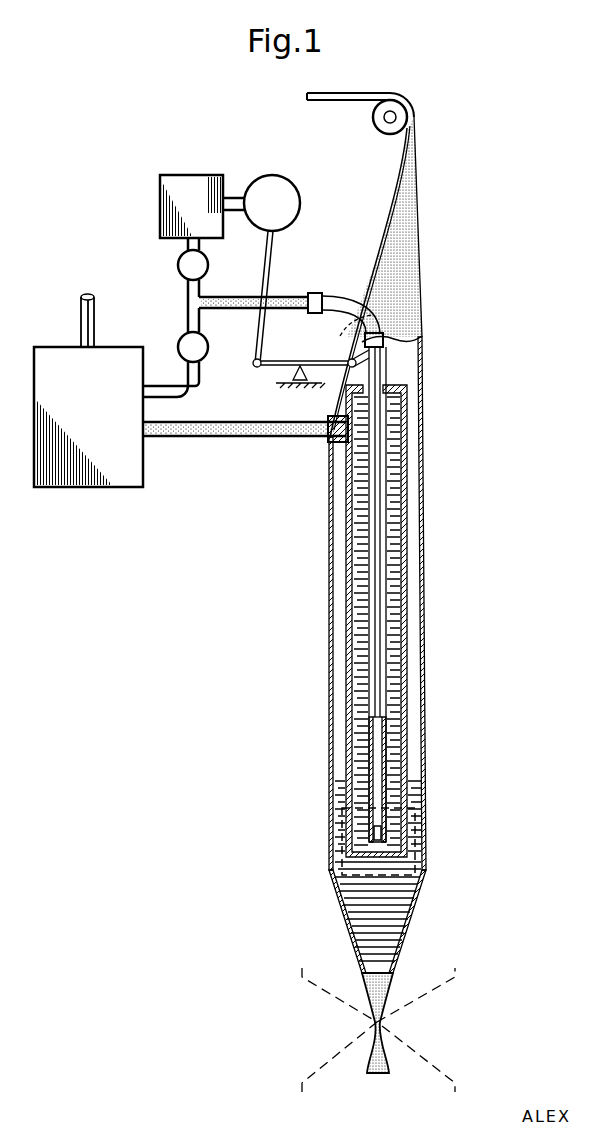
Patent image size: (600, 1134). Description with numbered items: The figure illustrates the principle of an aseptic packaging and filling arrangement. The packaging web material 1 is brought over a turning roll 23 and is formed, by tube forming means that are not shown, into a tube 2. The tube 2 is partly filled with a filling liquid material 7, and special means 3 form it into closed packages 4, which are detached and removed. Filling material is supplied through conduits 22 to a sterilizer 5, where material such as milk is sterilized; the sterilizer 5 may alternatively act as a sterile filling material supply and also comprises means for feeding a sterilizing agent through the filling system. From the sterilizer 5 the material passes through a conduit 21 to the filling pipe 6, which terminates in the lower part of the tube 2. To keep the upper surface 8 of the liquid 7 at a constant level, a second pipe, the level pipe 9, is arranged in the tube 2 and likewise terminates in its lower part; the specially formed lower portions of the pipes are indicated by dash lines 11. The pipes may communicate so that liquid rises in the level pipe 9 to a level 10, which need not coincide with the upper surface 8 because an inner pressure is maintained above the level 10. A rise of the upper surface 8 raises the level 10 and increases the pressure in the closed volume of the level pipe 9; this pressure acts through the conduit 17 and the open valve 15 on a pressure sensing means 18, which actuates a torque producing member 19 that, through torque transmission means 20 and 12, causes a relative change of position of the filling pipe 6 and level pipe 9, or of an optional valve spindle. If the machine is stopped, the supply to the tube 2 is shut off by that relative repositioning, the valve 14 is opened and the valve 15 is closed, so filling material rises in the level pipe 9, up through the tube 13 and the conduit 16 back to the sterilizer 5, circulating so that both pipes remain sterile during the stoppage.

The packaging web material 1 is at (366, 96).
The tube 2 is at (424, 469).
The special means 3 is at (342, 1030).
The closed packages 4 is at (388, 1063).
The sterilizer 5 is at (93, 478).
The filling pipe 6 is at (404, 528).
The filling liquid material 7 is at (421, 797).
The upper surface 8 is at (412, 778).
The level pipe 9 is at (390, 580).
The level 10 is at (385, 828).
The dash lines 11 is at (424, 866).
The torque transmission means 12 is at (325, 360).
The tube 13 is at (334, 300).
The valve 14 is at (179, 345).
The valve 15 is at (177, 265).
The conduit 16 is at (203, 327).
The conduit 17 is at (203, 298).
The pressure sensing means 18 is at (193, 195).
The torque producing member 19 is at (280, 192).
The torque transmission means 20 is at (269, 282).
The conduit 21 is at (205, 438).
The conduits 22 is at (86, 313).
The turning roll 23 is at (405, 118).